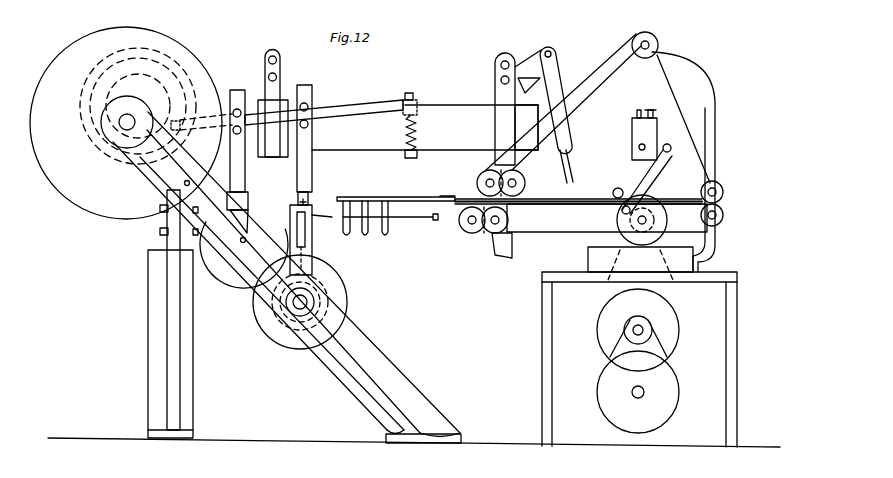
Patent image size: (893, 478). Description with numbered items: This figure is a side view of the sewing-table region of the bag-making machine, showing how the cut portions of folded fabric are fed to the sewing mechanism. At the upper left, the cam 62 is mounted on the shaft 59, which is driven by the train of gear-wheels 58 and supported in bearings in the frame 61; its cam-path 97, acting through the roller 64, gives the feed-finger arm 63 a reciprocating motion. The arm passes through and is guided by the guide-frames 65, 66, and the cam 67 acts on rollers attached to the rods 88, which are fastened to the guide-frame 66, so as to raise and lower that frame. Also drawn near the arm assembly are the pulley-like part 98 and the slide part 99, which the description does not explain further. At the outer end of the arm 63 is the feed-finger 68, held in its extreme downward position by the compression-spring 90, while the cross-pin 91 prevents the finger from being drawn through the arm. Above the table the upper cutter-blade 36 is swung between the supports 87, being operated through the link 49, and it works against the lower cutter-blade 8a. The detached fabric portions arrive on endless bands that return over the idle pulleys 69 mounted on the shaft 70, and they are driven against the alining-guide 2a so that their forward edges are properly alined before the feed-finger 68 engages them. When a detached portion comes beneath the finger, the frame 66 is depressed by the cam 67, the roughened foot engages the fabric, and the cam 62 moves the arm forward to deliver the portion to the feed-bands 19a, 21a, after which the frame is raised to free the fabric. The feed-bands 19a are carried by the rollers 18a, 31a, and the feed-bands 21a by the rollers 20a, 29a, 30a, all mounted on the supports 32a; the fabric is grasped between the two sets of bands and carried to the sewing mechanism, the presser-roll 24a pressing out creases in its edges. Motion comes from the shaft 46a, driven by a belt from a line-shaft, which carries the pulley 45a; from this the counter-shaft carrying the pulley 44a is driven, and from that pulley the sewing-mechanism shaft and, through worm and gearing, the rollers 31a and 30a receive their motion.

The cam 62 is at (103, 33).
The cam-path 97 is at (100, 82).
The train of gear-wheels 58 is at (96, 147).
The shaft 59 is at (125, 130).
The roller 64 is at (178, 124).
The frame 61 is at (330, 370).
The pulley 98 is at (348, 300).
The cam 67 is at (332, 272).
The slide block 99 is at (312, 243).
The rod 88 is at (314, 200).
The guide-frame 65 is at (242, 80).
The guide-frame 66 is at (306, 88).
The support 87 is at (270, 52).
The upper cutter-blade 36 is at (338, 104).
The feed-finger arm 63 is at (372, 110).
The cross-pin 91 is at (404, 99).
The feed-finger 68 is at (413, 94).
The compression-spring 90 is at (405, 140).
The lower cutter-blade 8a is at (350, 193).
The idle pulley 69 is at (388, 230).
The shaft 70 is at (412, 216).
The alining-guide 2a is at (420, 198).
The roller 20a is at (524, 184).
The roller 18a is at (493, 233).
The feed-band 19a is at (566, 226).
The link 49 is at (552, 88).
The roller 29a is at (658, 43).
The feed-band 21a is at (598, 86).
The support 32a is at (716, 125).
The roller 30a is at (723, 193).
The roller 31a is at (723, 217).
The presser-roll 24a is at (618, 188).
The pulley 44a is at (610, 318).
The pulley 45a is at (610, 372).
The shaft 46a is at (641, 388).